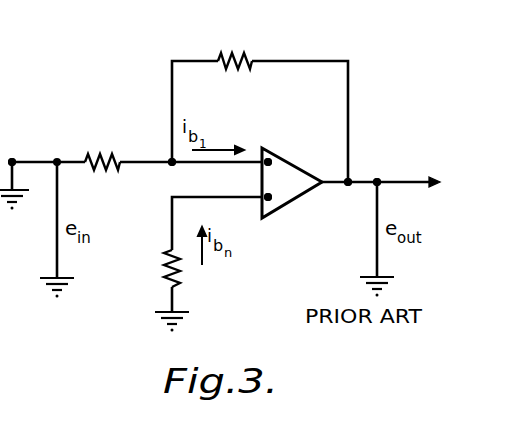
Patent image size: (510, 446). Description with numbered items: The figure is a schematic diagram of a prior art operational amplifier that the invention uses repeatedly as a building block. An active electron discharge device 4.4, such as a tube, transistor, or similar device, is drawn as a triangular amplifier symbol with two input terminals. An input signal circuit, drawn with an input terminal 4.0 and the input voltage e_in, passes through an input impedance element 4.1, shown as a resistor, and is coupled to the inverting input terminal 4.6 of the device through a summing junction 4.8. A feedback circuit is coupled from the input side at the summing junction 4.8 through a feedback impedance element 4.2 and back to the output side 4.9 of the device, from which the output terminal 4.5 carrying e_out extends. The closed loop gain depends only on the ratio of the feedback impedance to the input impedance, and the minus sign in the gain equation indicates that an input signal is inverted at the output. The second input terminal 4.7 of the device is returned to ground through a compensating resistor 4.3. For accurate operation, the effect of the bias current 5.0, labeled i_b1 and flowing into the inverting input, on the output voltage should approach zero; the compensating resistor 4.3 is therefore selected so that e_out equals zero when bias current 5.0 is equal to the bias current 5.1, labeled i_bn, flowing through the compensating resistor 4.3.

The input terminal 4.0 is at (13, 160).
The input impedance element 4.1 is at (97, 155).
The feedback impedance element 4.2 is at (232, 56).
The compensating resistor 4.3 is at (168, 270).
The active electron discharge device 4.4 is at (295, 162).
The output terminal 4.5 is at (378, 180).
The inverting input terminal 4.6 is at (268, 160).
The non-inverting input 4.7 is at (272, 199).
The summing junction 4.8 is at (170, 160).
The output side 4.9 is at (349, 180).
The bias current 5.0 is at (218, 148).
The bias current 5.1 is at (204, 236).